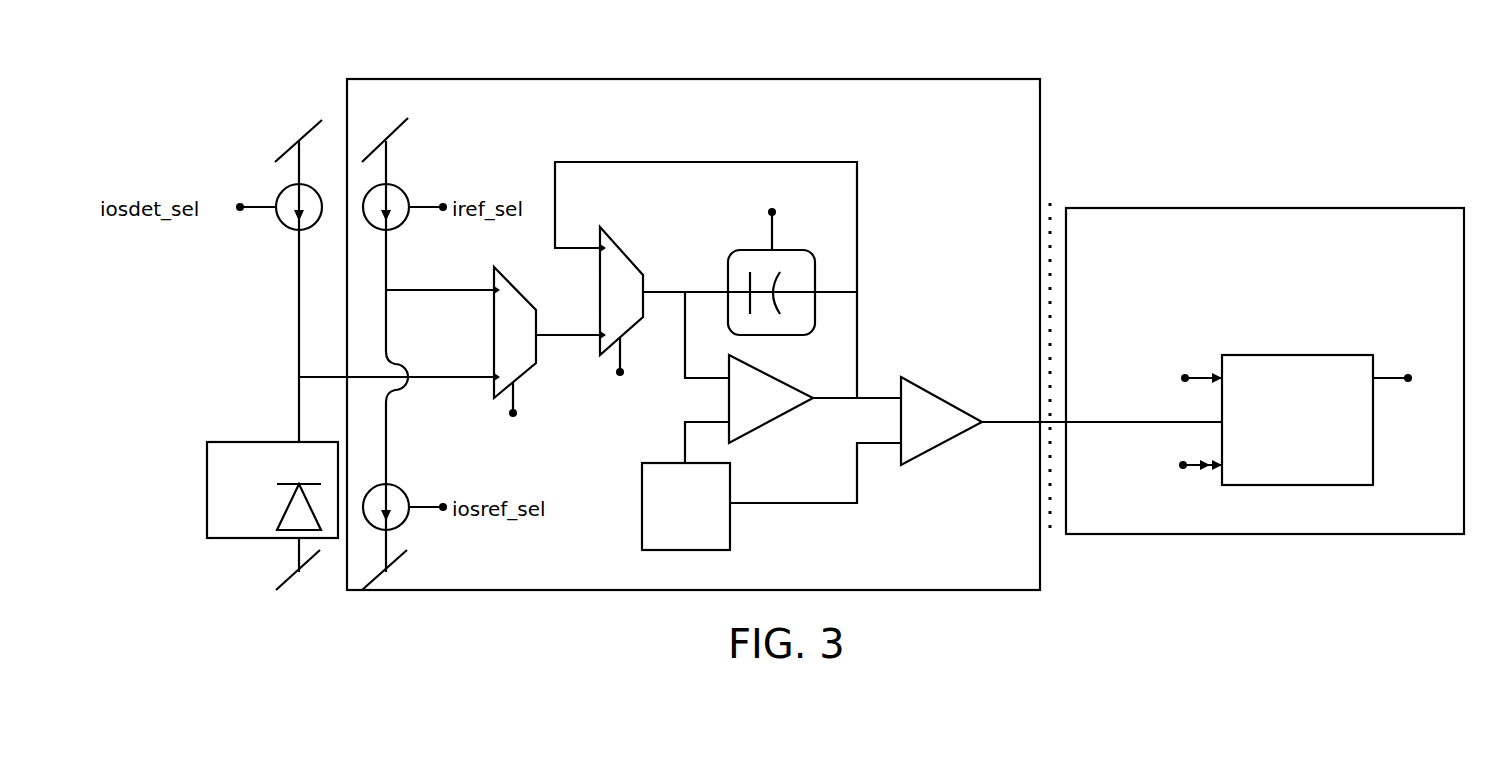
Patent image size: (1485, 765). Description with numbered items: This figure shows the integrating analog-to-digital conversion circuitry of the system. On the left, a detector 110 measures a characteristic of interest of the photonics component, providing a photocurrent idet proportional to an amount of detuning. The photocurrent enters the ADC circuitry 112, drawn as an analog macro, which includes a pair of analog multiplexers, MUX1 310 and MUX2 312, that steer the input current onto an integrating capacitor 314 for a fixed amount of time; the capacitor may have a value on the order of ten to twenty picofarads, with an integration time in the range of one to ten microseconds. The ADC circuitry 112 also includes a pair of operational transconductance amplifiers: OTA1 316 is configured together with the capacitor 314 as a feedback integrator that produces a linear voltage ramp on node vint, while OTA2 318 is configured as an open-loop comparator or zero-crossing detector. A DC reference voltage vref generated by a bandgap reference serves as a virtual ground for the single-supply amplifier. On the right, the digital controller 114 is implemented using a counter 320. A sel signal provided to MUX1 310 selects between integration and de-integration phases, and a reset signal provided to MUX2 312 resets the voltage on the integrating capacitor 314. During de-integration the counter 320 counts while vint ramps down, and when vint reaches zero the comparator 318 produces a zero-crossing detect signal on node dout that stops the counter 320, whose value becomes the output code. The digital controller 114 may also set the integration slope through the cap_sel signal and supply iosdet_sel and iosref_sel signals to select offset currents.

The detector 110 is at (275, 441).
The ADC circuitry 112 is at (692, 78).
The digital controller 114 is at (1220, 207).
The MUX1 310 is at (493, 267).
The MUX2 312 is at (612, 232).
The integrating capacitor 314 is at (778, 248).
The OTA1 316 is at (795, 390).
The OTA2 318 is at (923, 385).
The counter 320 is at (1322, 354).